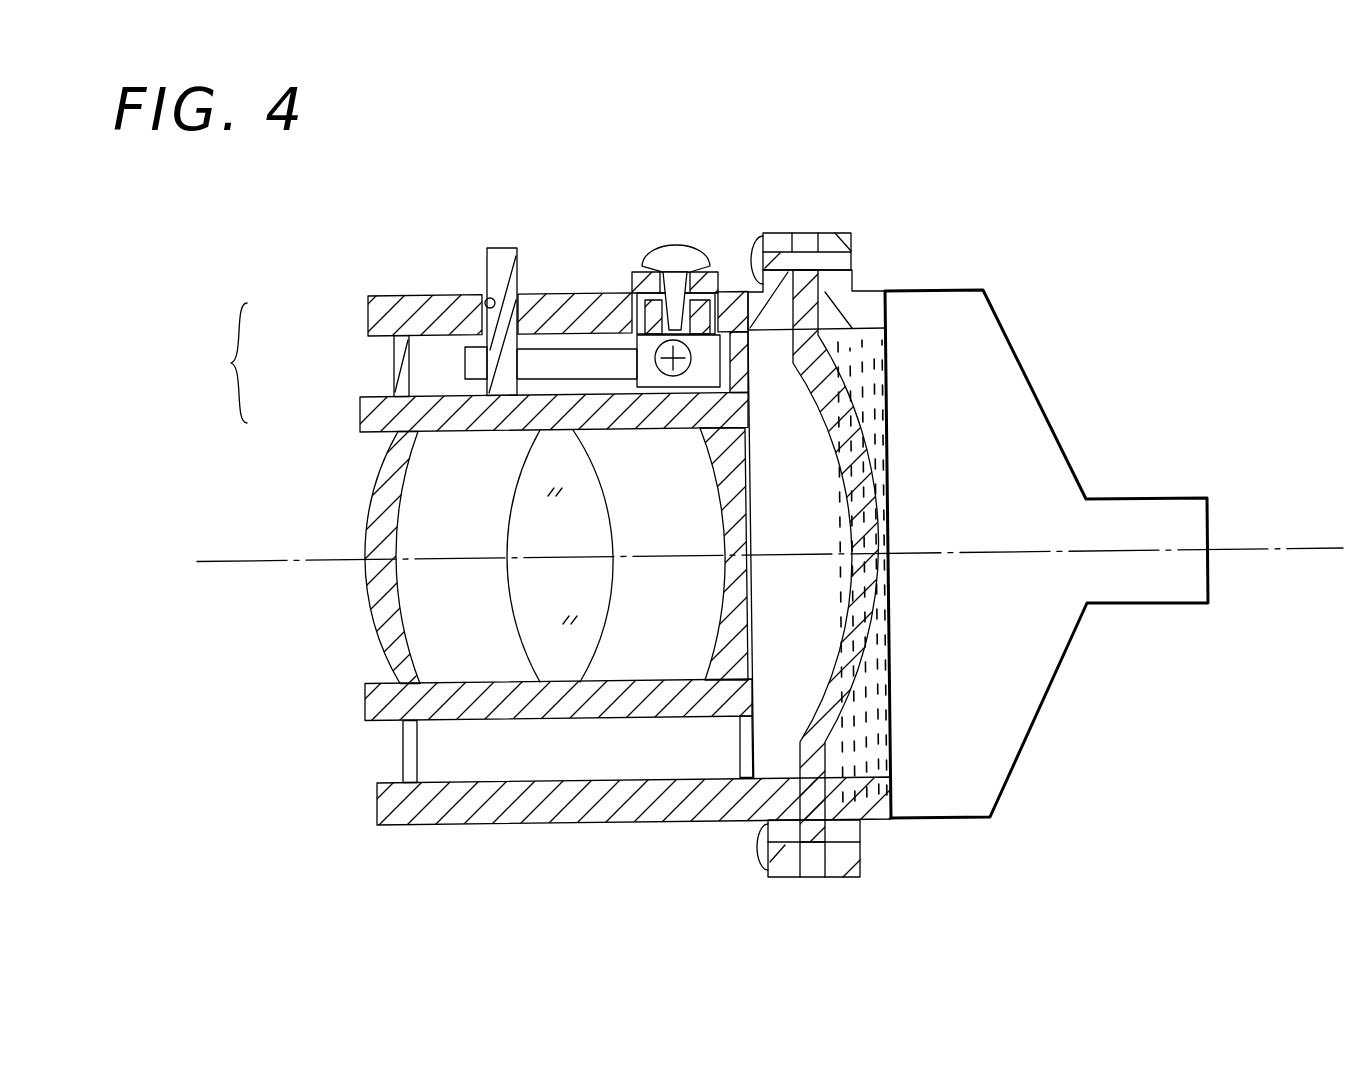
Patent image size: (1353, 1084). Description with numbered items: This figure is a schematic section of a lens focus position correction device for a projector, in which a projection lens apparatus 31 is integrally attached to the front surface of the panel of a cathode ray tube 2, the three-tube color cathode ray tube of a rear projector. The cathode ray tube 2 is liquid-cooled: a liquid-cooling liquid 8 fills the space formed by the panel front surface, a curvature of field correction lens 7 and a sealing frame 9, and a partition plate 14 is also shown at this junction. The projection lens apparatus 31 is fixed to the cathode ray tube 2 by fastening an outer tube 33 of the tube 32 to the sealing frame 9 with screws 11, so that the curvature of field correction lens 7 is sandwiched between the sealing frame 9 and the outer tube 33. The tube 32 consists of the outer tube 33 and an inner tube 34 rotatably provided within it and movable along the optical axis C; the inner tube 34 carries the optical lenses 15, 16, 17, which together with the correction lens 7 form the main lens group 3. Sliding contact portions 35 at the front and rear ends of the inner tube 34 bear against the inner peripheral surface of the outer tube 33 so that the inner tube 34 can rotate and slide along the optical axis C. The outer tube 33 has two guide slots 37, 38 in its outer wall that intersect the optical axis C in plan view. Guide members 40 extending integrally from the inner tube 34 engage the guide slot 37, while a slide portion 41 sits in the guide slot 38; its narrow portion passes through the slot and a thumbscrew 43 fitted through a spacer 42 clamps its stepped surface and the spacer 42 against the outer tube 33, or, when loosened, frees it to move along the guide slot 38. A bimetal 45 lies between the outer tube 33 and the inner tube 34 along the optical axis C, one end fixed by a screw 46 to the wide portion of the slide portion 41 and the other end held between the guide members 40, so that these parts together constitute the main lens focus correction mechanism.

The cathode ray tube 2 is at (1034, 672).
The main lens group 3 is at (350, 507).
The curvature of field correction lens 7 is at (850, 482).
The liquid-cooling liquid 8 is at (862, 367).
The sealing frame 9 is at (862, 302).
The screws 11 is at (758, 252).
The partition plate 14 is at (805, 236).
The optical lens 15 is at (372, 596).
The optical lens 16 is at (518, 582).
The optical lens 17 is at (722, 588).
The projection lens apparatus 31 is at (534, 838).
The tube 32 is at (215, 363).
The outer tube 33 is at (370, 312).
The inner tube 34 is at (362, 418).
The sliding contact portions 35 is at (403, 742).
The guide slot 37 is at (488, 297).
The guide slot 38 is at (632, 292).
The guide member 40 is at (500, 258).
The slide portion 41 is at (665, 389).
The spacer 42 is at (716, 280).
The thumbscrew 43 is at (663, 250).
The bimetal 45 is at (545, 362).
The screw 46 is at (718, 363).
The optical axis C is at (1283, 550).